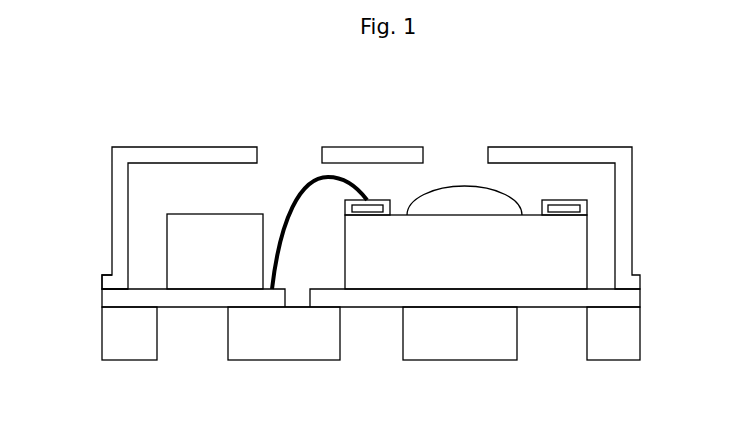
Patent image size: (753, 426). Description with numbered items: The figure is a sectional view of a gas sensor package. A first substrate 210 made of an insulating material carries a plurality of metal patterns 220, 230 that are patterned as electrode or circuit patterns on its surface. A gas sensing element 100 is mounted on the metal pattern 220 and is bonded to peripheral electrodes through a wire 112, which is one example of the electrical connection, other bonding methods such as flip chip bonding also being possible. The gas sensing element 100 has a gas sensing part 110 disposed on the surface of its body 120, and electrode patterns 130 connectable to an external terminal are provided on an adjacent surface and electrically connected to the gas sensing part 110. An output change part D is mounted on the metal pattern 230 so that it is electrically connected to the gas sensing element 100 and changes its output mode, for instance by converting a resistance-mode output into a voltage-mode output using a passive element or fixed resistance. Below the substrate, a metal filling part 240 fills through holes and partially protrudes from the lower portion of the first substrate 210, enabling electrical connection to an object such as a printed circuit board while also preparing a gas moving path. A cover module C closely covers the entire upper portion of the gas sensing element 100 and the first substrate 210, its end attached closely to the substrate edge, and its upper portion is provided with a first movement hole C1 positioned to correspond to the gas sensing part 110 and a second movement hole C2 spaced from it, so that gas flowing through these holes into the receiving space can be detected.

The gas sensing element 100 is at (537, 183).
The gas sensing part 110 is at (490, 187).
The wire 112 is at (332, 162).
The body 120 is at (572, 232).
The electrode patterns 130 is at (587, 199).
The first substrate 210 is at (640, 330).
The metal pattern 220 is at (640, 295).
The metal pattern 230 is at (102, 293).
The metal filling part 240 is at (548, 338).
The cover module C is at (162, 152).
The first movement hole C1 is at (285, 155).
The second movement hole C2 is at (445, 155).
The output change part D is at (185, 275).